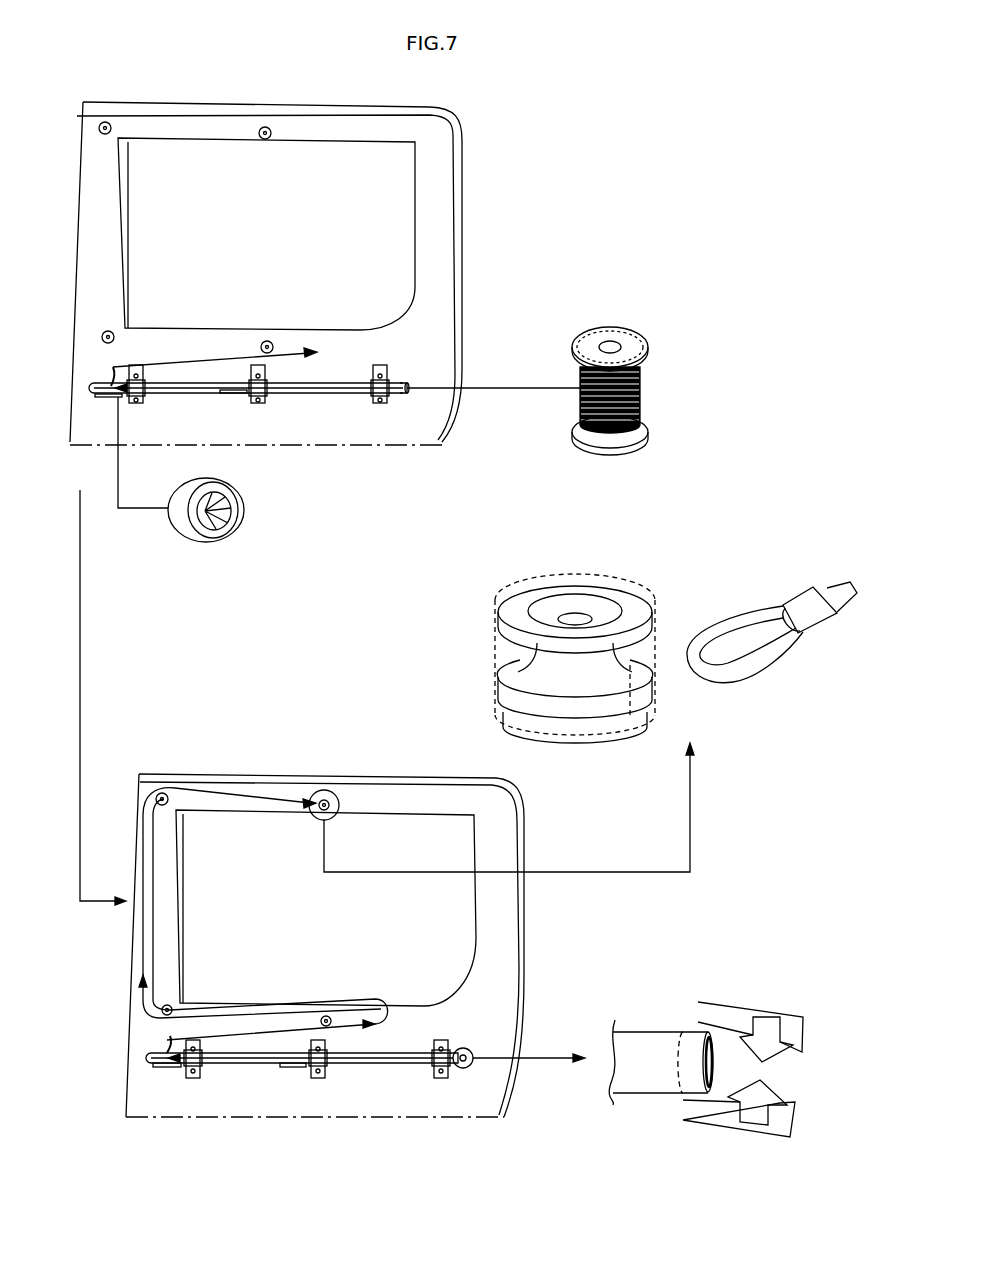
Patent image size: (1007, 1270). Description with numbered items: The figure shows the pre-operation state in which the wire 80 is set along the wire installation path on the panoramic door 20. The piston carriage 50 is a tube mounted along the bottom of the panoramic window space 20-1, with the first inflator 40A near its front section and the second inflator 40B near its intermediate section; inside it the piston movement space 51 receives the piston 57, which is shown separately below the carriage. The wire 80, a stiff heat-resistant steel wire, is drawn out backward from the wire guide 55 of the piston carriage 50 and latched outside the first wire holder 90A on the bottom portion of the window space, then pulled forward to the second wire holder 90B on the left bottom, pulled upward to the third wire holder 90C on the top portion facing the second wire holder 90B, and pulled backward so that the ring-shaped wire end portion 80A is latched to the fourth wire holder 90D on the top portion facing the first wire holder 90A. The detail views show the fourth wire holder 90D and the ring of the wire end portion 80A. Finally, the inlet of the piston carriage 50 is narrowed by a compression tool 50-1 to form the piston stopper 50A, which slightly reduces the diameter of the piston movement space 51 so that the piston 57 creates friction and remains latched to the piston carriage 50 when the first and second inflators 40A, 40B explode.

The panoramic door 20 is at (437, 175).
The panoramic window space 20-1 is at (395, 233).
The piston carriage 50 is at (395, 378).
The piston stopper 50A is at (697, 1080).
The compression tool 50-1 is at (732, 1013).
The piston movement space 51 is at (343, 380).
The wire guide 55 is at (113, 370).
The piston 57 is at (230, 512).
The wire 80 is at (212, 362).
The wire end portion 80A is at (742, 622).
The first inflator 40A is at (171, 1068).
The second inflator 40B is at (296, 1068).
The first wire holder 90A is at (322, 1006).
The second wire holder 90B is at (187, 1003).
The third wire holder 90C is at (168, 805).
The fourth wire holder 90D is at (617, 610).